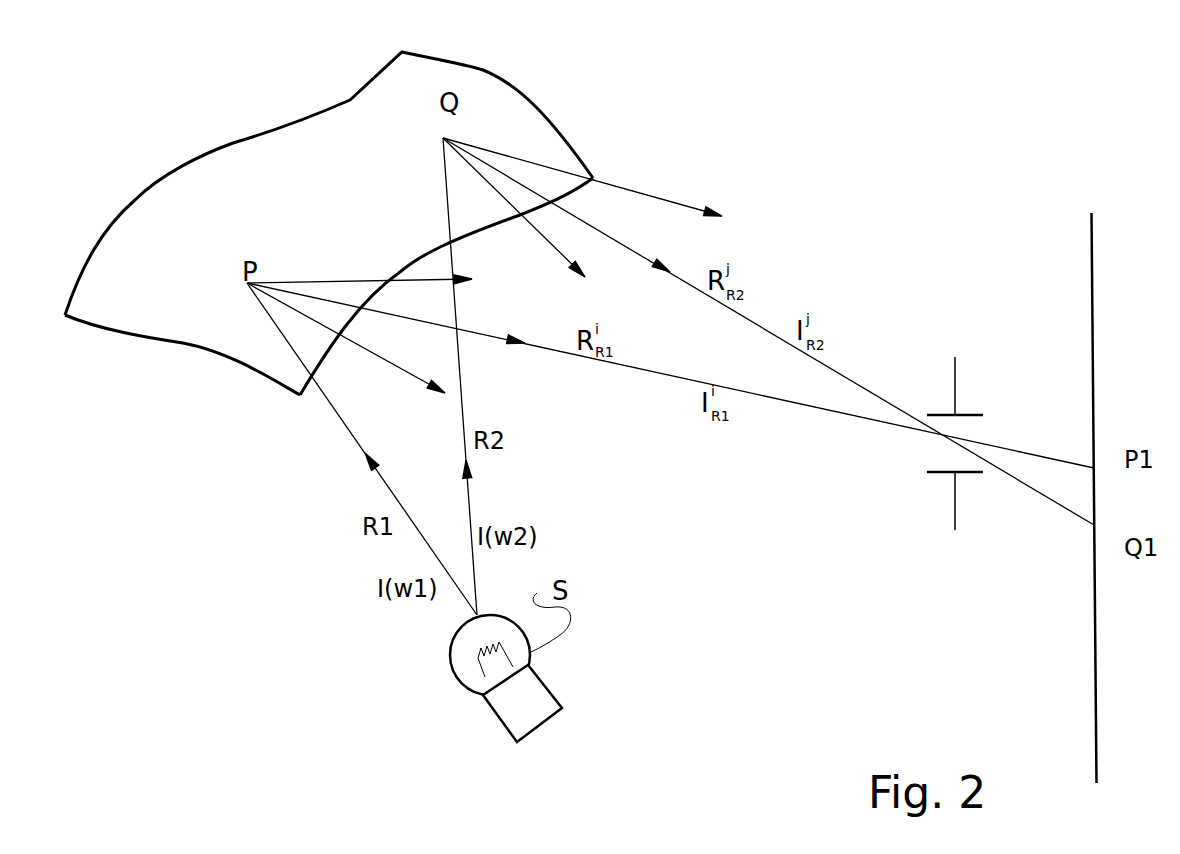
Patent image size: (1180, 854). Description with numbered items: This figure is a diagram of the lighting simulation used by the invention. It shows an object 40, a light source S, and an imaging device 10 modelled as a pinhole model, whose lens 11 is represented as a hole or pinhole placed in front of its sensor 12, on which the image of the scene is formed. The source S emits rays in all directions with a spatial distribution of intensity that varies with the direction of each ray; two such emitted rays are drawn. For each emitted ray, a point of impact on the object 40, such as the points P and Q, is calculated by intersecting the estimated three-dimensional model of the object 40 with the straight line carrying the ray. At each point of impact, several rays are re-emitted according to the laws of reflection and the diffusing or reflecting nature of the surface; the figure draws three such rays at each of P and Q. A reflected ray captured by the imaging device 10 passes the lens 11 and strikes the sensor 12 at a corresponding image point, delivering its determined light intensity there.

The object 40 is at (287, 131).
The imaging device 10 is at (1125, 183).
The lens 11 is at (955, 378).
The sensor 12 is at (1093, 387).